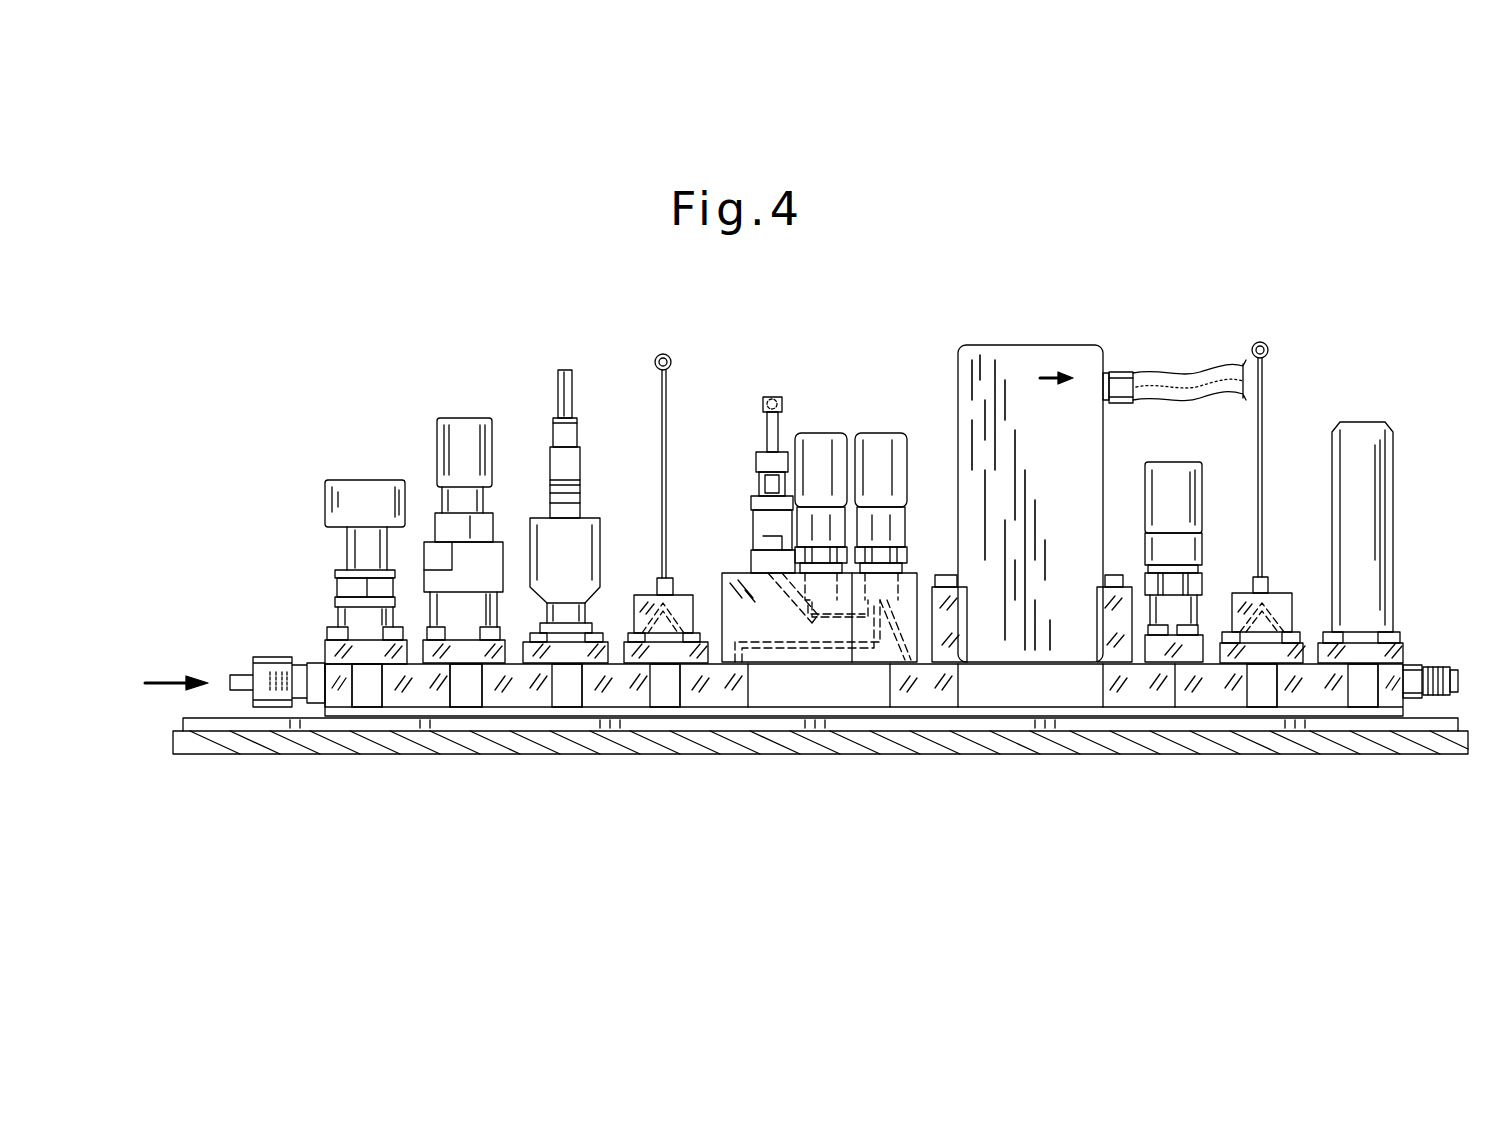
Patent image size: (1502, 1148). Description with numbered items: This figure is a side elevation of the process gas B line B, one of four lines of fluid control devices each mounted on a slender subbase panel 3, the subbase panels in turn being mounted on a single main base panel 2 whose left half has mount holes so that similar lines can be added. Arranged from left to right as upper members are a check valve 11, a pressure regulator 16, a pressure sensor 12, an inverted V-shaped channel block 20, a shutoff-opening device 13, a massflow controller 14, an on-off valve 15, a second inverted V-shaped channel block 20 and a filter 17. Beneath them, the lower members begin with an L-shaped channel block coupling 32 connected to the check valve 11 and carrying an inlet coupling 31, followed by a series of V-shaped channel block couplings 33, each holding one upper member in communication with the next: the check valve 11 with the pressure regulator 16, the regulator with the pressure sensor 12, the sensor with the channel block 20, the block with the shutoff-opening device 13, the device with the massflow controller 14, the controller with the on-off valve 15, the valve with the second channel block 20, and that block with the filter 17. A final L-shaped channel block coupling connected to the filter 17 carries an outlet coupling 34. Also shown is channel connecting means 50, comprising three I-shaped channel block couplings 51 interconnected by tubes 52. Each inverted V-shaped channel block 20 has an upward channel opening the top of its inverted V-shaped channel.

The main base panel 2 is at (1440, 742).
The subbase panel 3 is at (1455, 718).
The check valve 11 is at (340, 512).
The pressure sensor 12 is at (588, 522).
The shutoff-opening device 13 is at (740, 585).
The massflow controller 14 is at (1010, 352).
The on-off valve 15 is at (1195, 487).
The pressure regulator 16 is at (437, 420).
The filter 17 is at (1378, 532).
The inverted V-shaped channel block 20 is at (650, 592).
The inlet coupling 31 is at (263, 700).
The L-shaped channel block coupling 32 is at (342, 697).
The V-shaped channel block coupling 33 is at (416, 693).
The outlet coupling 34 is at (1305, 690).
The channel connecting means 50 is at (768, 397).
The I-shaped channel block coupling 51 is at (758, 522).
The tube 52 is at (768, 447).
The process gas B line B is at (1343, 376).